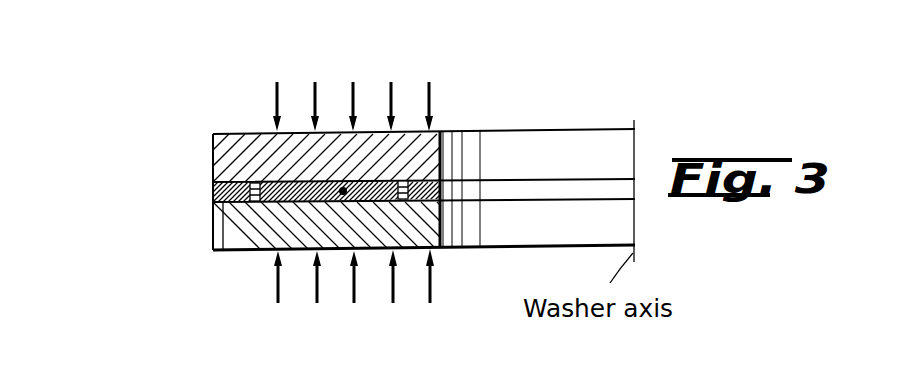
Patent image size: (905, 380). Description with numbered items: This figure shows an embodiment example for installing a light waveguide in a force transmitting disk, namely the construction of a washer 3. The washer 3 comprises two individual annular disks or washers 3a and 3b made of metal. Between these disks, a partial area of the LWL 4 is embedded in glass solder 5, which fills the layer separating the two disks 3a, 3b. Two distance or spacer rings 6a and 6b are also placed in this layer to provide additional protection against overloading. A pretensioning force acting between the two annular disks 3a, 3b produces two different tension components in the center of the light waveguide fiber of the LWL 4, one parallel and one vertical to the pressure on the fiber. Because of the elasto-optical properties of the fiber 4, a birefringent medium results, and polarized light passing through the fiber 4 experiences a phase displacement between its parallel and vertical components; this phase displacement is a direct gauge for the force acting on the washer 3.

The washer 3 is at (228, 127).
The annular disk 3a is at (297, 133).
The annular disk 3b is at (424, 238).
The LWL 4 is at (344, 188).
The glass solder 5 is at (223, 250).
The distance ring 6a is at (250, 185).
The distance ring 6b is at (405, 184).